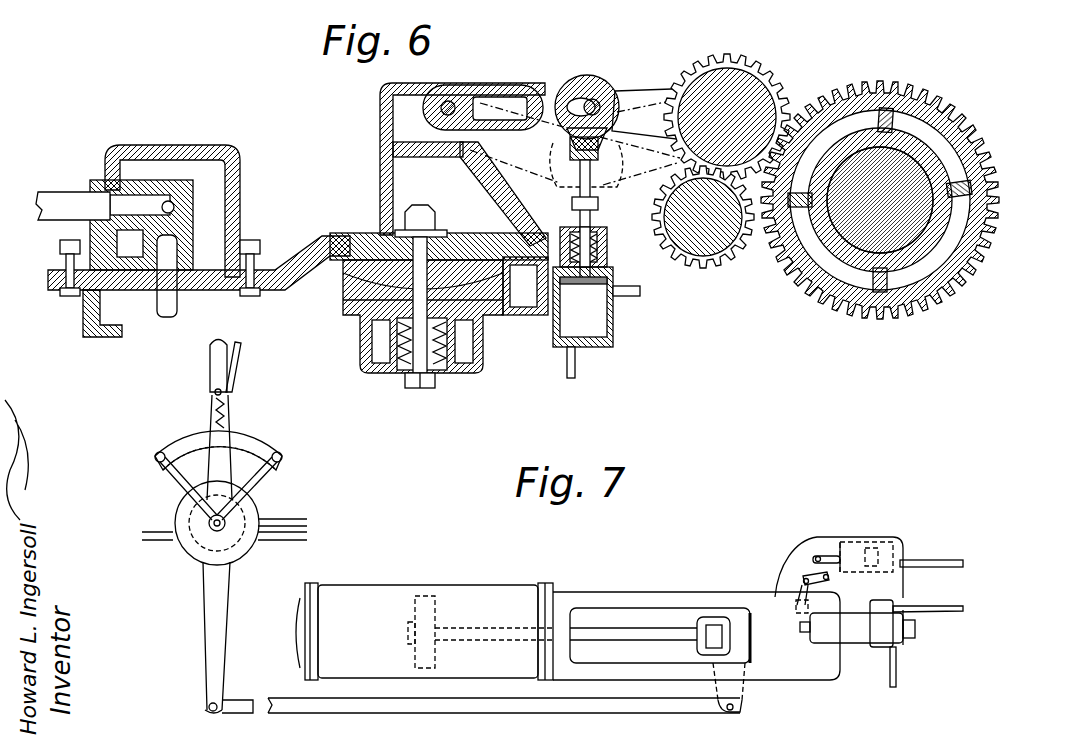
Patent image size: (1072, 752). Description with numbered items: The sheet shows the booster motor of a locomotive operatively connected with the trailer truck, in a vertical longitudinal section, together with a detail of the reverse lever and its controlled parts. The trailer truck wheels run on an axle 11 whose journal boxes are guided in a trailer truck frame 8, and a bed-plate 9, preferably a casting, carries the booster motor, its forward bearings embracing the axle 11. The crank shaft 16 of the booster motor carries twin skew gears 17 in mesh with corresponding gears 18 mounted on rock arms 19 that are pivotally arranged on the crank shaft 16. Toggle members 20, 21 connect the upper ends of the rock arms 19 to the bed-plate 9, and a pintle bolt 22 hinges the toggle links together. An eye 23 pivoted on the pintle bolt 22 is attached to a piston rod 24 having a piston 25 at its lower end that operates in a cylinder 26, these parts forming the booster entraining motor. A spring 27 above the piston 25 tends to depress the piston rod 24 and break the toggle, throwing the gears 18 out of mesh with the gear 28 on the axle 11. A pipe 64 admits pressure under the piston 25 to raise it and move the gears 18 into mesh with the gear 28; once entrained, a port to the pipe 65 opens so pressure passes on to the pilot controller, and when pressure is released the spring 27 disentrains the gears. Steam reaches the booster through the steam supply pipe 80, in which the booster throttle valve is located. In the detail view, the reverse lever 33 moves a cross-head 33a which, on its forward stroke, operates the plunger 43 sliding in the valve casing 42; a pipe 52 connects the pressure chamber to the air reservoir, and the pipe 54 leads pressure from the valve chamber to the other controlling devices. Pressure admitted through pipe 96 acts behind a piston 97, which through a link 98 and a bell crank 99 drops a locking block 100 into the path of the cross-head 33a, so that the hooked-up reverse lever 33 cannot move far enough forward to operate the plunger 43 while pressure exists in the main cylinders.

In FIG. 6, the booster motor steam supply pipe 80 is at (52, 197).
In FIG. 6, the bed-plate 9 is at (104, 340).
In FIG. 6, the toggle member 21 is at (535, 85).
In FIG. 6, the toggle member 20 is at (637, 86).
In FIG. 6, the eye 23 is at (565, 88).
In FIG. 6, the pintle bolt 22 is at (594, 100).
In FIG. 6, the rock arms 19 is at (640, 151).
In FIG. 6, the piston rod 24 is at (557, 186).
In FIG. 6, the piston 25 is at (590, 287).
In FIG. 6, the spring 27 is at (608, 254).
In FIG. 6, the cylinder 26 is at (616, 325).
In FIG. 6, the pipe 65 is at (641, 294).
In FIG. 6, the pipe 64 is at (576, 368).
In FIG. 6, the trailer truck frame 8 is at (478, 373).
In FIG. 6, the gears 18 is at (750, 62).
In FIG. 6, the twin skew gears 17 is at (735, 272).
In FIG. 6, the crank shaft 16 is at (712, 265).
In FIG. 6, the gear 28 is at (972, 122).
In FIG. 6, the axle 11 is at (928, 190).
In FIG. 7, the reverse lever 33 is at (215, 370).
In FIG. 7, the cross-head 33a is at (738, 628).
In FIG. 7, the piston 97 is at (872, 548).
In FIG. 7, the link 98 is at (825, 558).
In FIG. 7, the bell crank 99 is at (803, 580).
In FIG. 7, the locking block 100 is at (798, 613).
In FIG. 7, the plunger 43 is at (801, 632).
In FIG. 7, the valve casing 42 is at (862, 623).
In FIG. 7, the pipe 52 is at (897, 670).
In FIG. 7, the pipe 96 is at (955, 562).
In FIG. 7, the pipe 54 is at (955, 607).